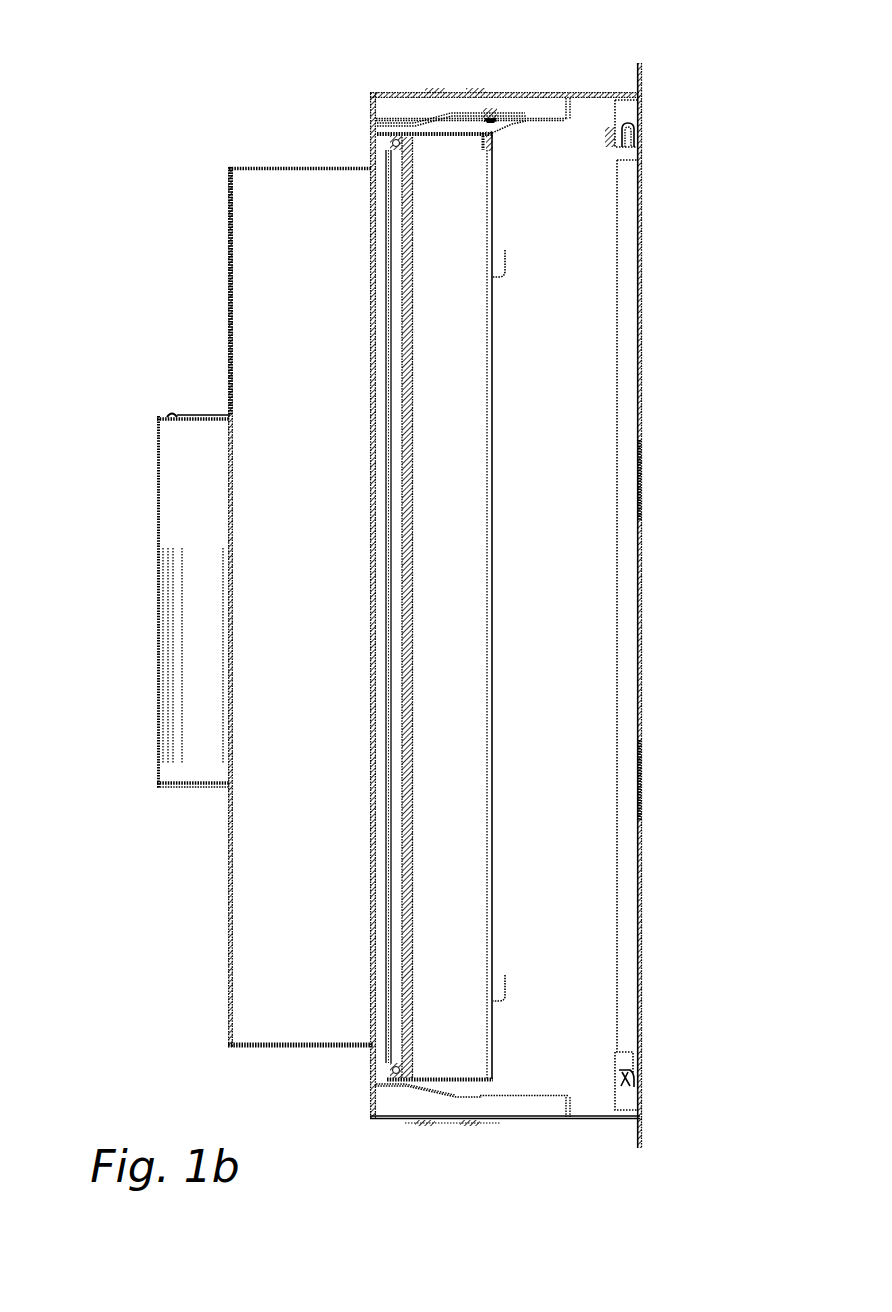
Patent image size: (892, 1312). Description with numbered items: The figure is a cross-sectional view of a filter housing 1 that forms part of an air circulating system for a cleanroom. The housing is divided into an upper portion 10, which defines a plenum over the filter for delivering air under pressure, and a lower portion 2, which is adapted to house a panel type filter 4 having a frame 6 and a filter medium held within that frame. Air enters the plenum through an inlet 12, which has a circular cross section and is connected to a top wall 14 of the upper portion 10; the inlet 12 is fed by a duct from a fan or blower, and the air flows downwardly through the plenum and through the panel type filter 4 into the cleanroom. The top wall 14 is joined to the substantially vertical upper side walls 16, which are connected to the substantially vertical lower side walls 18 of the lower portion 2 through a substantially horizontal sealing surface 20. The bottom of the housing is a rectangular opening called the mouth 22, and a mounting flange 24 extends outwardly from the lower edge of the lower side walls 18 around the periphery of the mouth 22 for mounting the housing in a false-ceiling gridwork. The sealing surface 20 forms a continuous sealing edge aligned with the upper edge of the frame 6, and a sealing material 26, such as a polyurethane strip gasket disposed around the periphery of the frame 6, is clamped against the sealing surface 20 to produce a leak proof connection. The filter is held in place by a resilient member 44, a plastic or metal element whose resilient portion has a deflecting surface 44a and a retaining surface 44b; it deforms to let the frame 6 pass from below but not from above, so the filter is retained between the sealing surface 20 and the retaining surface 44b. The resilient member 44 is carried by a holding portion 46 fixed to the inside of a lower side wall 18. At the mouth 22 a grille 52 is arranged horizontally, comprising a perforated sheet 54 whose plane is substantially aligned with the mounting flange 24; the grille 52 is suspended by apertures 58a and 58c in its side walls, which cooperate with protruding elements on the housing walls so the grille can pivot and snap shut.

The filter housing 1 is at (190, 110).
The lower portion 2 is at (557, 887).
The panel type filter 4 is at (486, 605).
The frame 6 is at (468, 609).
The upper portion 10 is at (250, 656).
The inlet 12 is at (157, 425).
The top wall 14 is at (230, 197).
The side wall 16 is at (275, 1046).
The lower side wall 18 is at (530, 1120).
The sealing surface 20 is at (385, 148).
The mouth 22 is at (641, 780).
The mounting flange 24 is at (684, 582).
The sealing material 26 is at (392, 1070).
The resilient member 44 is at (547, 197).
The deflecting surface 44a is at (510, 125).
The retaining surface 44b is at (485, 134).
The holding portion 46 is at (543, 110).
The grille 52 is at (680, 603).
The perforated sheet 54 is at (641, 478).
The aperture 58a is at (634, 1078).
The aperture 58c is at (636, 130).